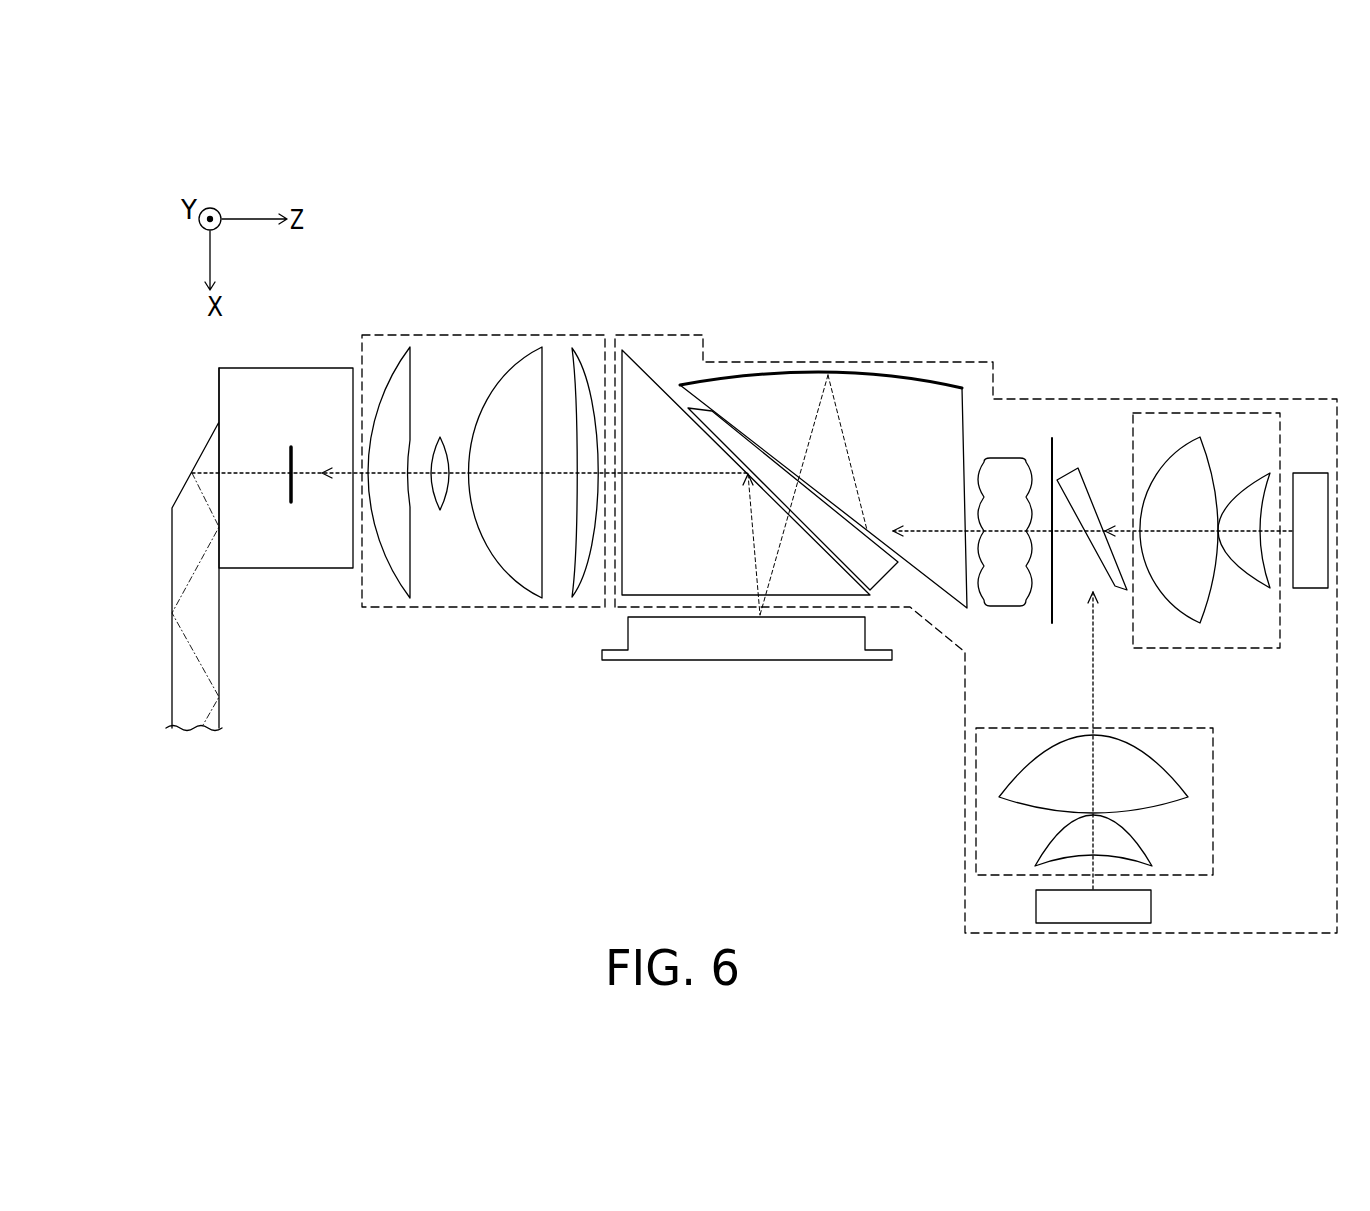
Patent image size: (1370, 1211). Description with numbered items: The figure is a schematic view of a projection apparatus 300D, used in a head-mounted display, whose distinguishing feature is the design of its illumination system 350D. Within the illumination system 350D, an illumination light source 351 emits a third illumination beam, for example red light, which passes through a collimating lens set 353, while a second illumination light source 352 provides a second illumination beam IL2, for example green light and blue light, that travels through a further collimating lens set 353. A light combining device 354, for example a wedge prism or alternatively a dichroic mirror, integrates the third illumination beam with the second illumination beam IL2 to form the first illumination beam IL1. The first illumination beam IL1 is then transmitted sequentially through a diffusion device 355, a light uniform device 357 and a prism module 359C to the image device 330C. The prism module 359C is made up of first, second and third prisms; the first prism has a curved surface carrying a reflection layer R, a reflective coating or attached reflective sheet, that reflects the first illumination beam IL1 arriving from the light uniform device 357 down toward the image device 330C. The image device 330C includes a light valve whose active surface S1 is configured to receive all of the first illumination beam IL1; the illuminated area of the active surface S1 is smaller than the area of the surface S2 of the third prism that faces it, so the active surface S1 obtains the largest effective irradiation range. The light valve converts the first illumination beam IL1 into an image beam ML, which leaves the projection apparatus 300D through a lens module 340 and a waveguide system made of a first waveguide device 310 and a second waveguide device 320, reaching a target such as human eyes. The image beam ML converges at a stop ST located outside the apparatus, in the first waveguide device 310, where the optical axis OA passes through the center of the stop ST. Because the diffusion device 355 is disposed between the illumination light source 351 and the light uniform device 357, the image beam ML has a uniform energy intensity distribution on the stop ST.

The first waveguide device 310 is at (285, 368).
The second waveguide device 320 is at (222, 638).
The image device 330C is at (707, 662).
The lens module 340 is at (473, 335).
The illumination system 350D is at (1223, 398).
The illumination light source 351 is at (1308, 588).
The second illumination light source 352 is at (1152, 902).
The collimating lens set 353 is at (1222, 652).
The light combining device 354 is at (1073, 468).
The diffusion device 355 is at (1055, 613).
The light uniform device 357 is at (1012, 458).
The prism module 359C is at (745, 293).
The projection apparatus 300D is at (452, 765).
The optical axis OA is at (312, 470).
The stop ST is at (296, 452).
The image beam ML is at (555, 473).
The reflection layer R is at (873, 363).
The first illumination beam IL1 is at (772, 575).
The second illumination beam IL2 is at (1088, 865).
The active surface S1 is at (847, 628).
The surface of the third prism S2 is at (667, 607).